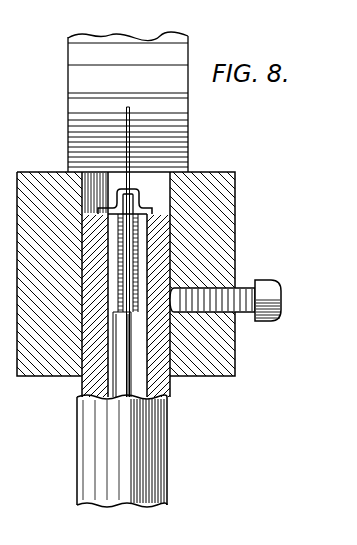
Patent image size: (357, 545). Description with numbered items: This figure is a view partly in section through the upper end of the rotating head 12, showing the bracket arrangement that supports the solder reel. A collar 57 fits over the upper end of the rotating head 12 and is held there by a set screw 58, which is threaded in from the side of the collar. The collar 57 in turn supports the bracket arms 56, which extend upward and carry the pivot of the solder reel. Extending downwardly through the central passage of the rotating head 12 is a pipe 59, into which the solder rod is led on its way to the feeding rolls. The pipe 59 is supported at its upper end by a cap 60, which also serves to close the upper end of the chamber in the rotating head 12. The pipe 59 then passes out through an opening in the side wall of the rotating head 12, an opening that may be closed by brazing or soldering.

The bracket arms 56 is at (145, 48).
The collar 57 is at (218, 222).
The set screw 58 is at (267, 256).
The pipe 59 is at (152, 222).
The cap 60 is at (150, 205).
The rotating head 12 is at (147, 448).